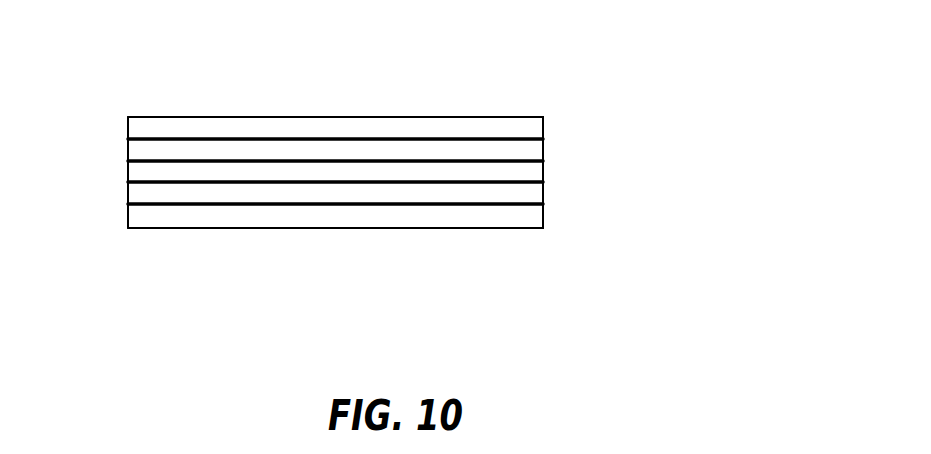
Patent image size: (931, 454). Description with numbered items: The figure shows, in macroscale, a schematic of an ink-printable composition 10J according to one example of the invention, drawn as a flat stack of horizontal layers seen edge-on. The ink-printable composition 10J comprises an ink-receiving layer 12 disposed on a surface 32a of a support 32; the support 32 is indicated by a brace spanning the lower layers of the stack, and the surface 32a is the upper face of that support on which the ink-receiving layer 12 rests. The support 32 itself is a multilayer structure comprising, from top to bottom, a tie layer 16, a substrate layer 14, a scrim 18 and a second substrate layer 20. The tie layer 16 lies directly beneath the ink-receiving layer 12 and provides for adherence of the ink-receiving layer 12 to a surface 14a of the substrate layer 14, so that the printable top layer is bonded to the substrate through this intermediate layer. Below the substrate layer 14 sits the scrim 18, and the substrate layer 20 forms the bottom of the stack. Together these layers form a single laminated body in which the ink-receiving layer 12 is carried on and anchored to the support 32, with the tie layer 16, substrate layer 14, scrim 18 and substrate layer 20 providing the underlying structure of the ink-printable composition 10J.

The ink-printable composition 10J is at (450, 180).
The ink-receiving layer 12 is at (490, 117).
The support 32 is at (360, 180).
The surface of support 32a is at (226, 137).
The tie layer 16 is at (543, 148).
The substrate layer 14 is at (543, 169).
The surface of substrate layer 14a is at (459, 161).
The scrim 18 is at (543, 195).
The substrate layer 20 is at (243, 228).